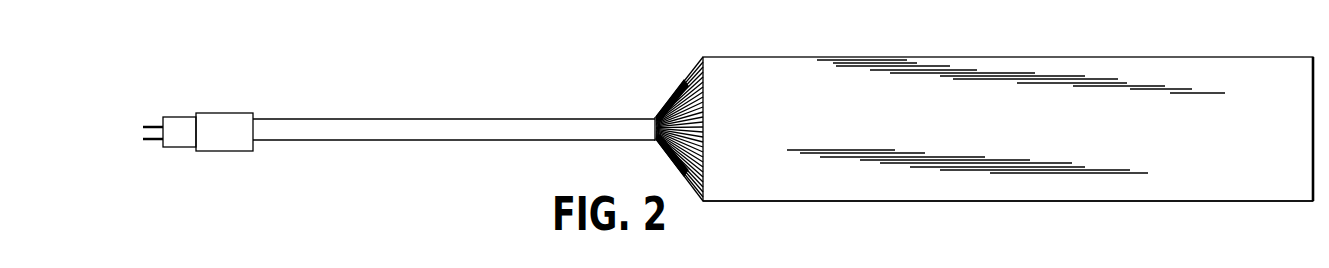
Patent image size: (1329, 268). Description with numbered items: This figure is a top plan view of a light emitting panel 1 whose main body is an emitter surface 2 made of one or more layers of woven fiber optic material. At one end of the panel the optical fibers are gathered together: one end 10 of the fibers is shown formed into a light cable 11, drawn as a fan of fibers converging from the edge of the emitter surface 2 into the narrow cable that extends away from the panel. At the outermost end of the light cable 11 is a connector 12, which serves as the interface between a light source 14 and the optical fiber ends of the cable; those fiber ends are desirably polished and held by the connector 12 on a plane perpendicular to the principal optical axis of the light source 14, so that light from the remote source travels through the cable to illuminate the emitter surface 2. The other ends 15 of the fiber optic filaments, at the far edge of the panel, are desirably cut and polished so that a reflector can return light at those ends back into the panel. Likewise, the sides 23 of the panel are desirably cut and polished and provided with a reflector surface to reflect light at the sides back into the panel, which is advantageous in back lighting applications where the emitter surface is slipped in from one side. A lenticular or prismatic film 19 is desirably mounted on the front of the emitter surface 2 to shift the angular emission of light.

The light emitting panel 1 is at (963, 123).
The emitter surface 2 is at (1107, 55).
The one end of the optical fibers 10 is at (668, 77).
The light cable 11 is at (460, 125).
The connector 12 is at (227, 121).
The light source 14 is at (180, 123).
The other ends of the fiber optic filaments 15 is at (1318, 105).
The lenticular or prismatic film 19 is at (1163, 190).
The sides 23 is at (882, 55).